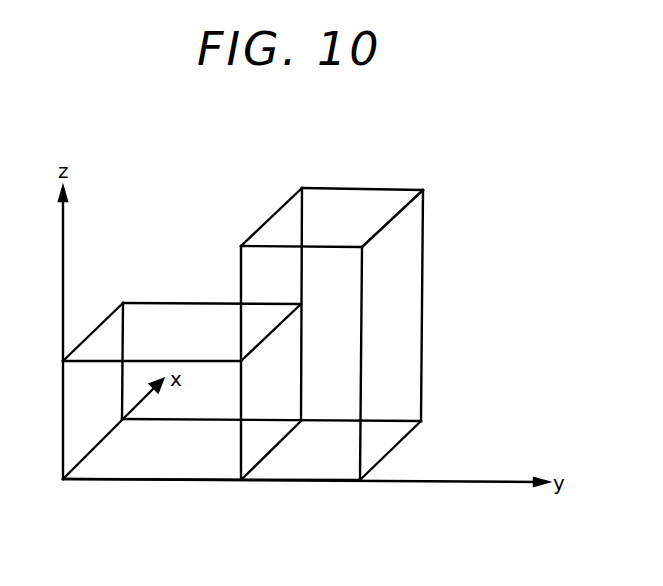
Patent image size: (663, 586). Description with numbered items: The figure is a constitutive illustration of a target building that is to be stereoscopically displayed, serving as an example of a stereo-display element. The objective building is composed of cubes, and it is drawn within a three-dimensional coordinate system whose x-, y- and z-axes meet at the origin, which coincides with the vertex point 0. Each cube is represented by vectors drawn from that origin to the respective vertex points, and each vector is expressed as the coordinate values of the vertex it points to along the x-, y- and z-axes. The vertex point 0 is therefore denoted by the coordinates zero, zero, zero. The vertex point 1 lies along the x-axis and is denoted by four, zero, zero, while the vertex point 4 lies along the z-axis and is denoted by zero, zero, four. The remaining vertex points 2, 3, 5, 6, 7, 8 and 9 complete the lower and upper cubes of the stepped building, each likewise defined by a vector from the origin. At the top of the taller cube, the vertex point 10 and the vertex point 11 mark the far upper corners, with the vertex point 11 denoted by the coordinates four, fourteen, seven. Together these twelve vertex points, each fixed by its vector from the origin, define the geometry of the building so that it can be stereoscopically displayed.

The vertex point 0 is at (52, 495).
The vertex point 1 is at (113, 408).
The vertex point 2 is at (431, 424).
The vertex point 3 is at (358, 496).
The vertex point 4 is at (52, 363).
The vertex point 5 is at (249, 372).
The vertex point 6 is at (119, 290).
The vertex point 7 is at (311, 308).
The vertex point 8 is at (229, 248).
The vertex point 9 is at (371, 262).
The vertex point 10 is at (297, 176).
The vertex point 11 is at (438, 181).